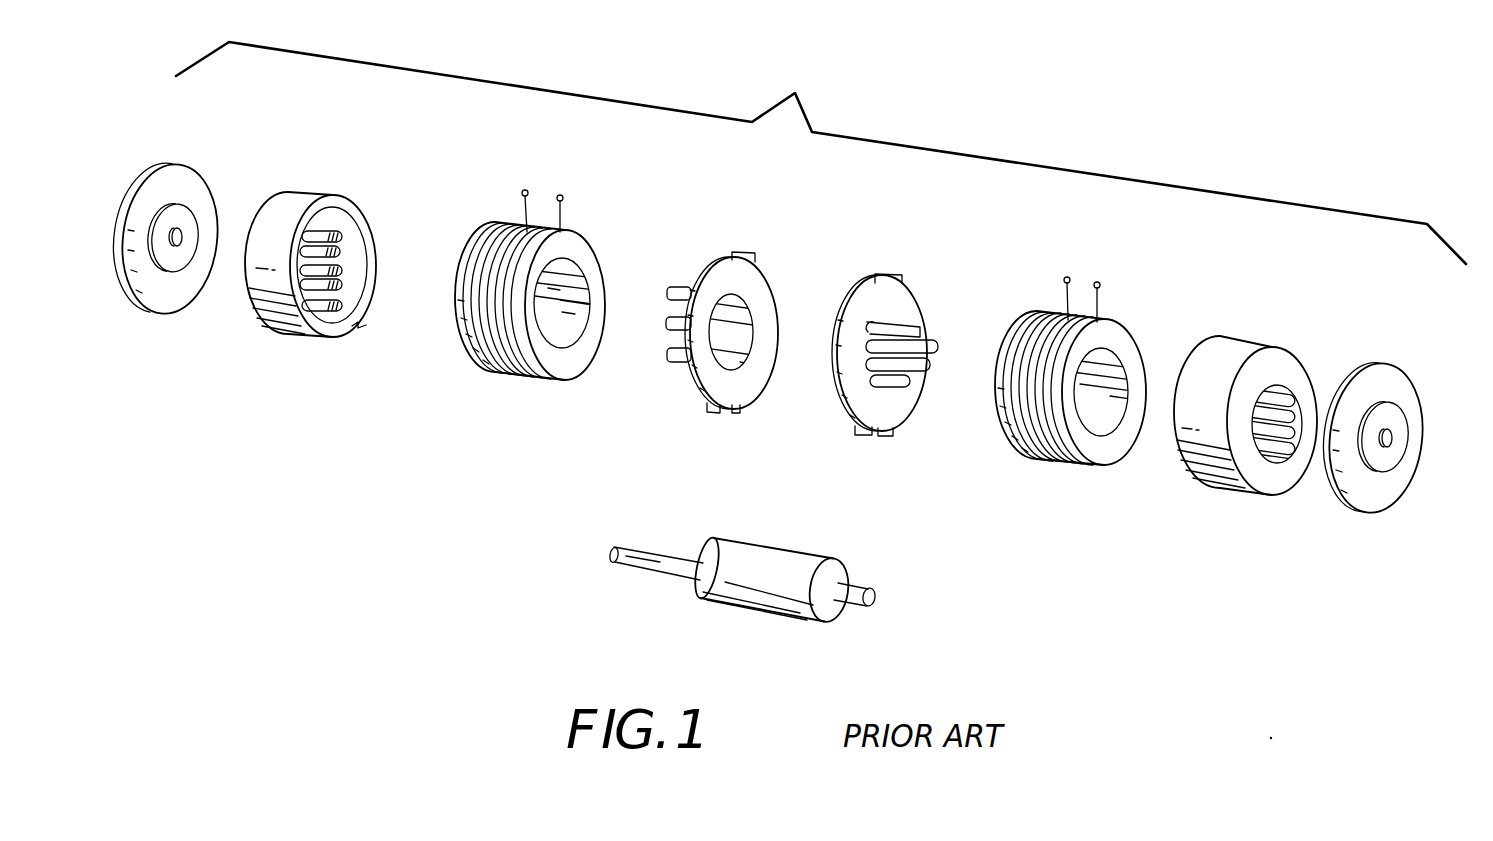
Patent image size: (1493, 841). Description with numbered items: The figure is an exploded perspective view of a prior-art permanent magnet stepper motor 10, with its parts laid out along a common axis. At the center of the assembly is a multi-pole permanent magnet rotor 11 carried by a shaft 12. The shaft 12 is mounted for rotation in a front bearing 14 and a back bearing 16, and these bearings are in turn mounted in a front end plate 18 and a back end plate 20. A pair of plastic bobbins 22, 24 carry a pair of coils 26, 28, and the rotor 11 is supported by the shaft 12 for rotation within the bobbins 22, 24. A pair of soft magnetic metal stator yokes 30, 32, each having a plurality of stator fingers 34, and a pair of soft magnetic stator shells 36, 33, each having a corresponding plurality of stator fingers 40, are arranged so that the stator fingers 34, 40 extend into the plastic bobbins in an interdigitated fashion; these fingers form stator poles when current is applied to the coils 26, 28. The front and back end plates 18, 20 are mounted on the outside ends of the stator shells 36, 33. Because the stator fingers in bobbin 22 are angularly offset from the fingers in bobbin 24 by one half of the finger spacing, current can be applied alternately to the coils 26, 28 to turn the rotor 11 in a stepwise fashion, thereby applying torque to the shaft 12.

The stepper motor 10 is at (821, 153).
The rotor 11 is at (787, 563).
The shaft 12 is at (668, 556).
The front bearing 14 is at (170, 262).
The back bearing 16 is at (1392, 455).
The front end plate 18 is at (183, 178).
The back end plate 20 is at (1395, 380).
The plastic bobbin 22 is at (585, 240).
The plastic bobbin 24 is at (1128, 338).
The coil 26 is at (541, 228).
The coil 28 is at (1080, 318).
The stator yoke 30 is at (760, 290).
The stator yoke 32 is at (895, 305).
The housing cup 33 is at (1228, 352).
The stator fingers 34 is at (690, 318).
The stator shell 36 is at (300, 205).
The stator fingers 40 is at (344, 272).